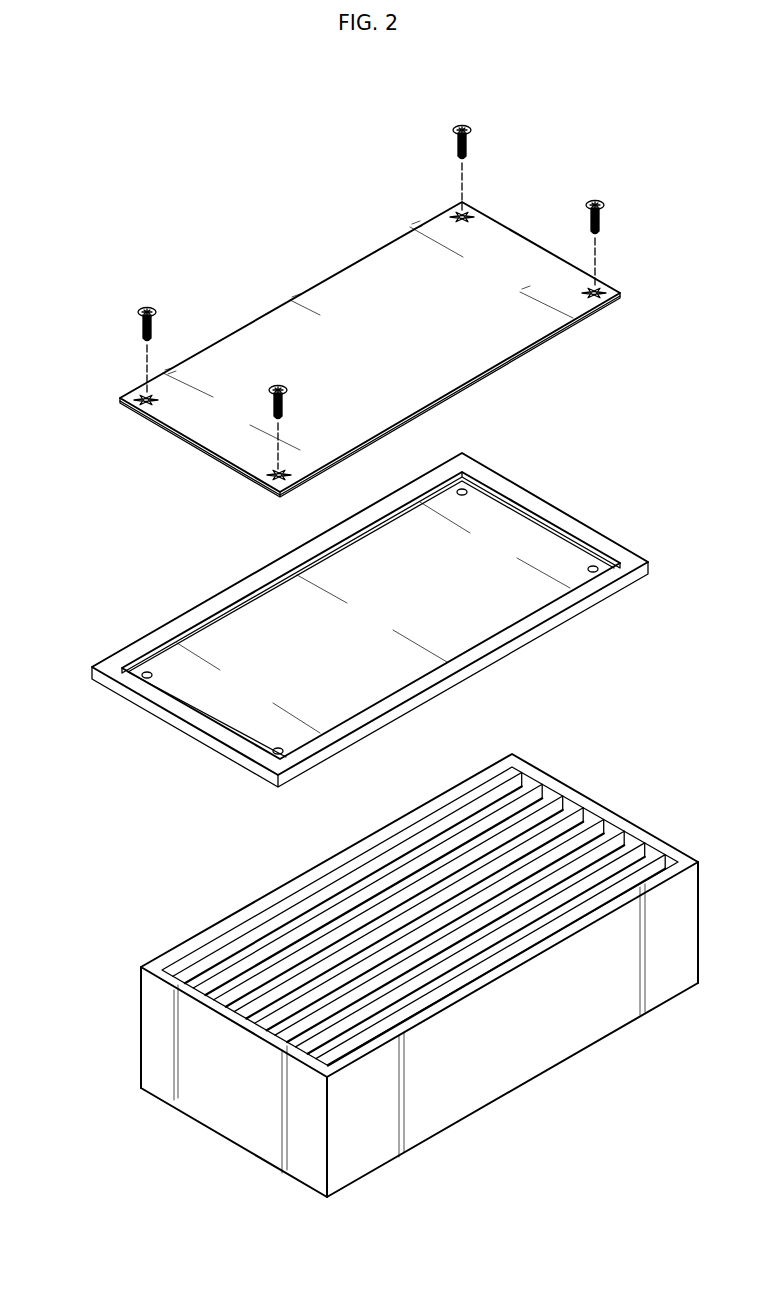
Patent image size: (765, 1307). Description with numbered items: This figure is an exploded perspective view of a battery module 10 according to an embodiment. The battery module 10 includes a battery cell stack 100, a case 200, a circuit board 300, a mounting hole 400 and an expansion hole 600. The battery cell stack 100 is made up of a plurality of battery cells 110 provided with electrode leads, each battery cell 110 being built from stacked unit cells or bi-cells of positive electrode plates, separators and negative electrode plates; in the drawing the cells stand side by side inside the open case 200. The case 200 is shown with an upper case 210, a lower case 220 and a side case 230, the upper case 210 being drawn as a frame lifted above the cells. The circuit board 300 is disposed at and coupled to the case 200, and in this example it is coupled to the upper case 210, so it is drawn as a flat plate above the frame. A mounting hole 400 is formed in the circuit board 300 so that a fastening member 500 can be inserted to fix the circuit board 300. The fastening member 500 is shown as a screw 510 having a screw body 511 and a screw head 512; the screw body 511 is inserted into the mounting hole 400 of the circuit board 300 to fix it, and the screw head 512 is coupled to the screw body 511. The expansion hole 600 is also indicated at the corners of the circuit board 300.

The battery module 10 is at (155, 108).
The battery cell stack 100 is at (289, 858).
The battery cell 110 is at (237, 972).
The case 200 is at (98, 1049).
The upper case 210 is at (152, 638).
The lower case 220 is at (165, 1108).
The side case 230 is at (152, 1003).
The circuit board 300 is at (200, 448).
The mounting hole 400 is at (137, 411).
The fastening member 500 is at (140, 270).
The screw 510 is at (152, 299).
The screw body 511 is at (141, 322).
The screw head 512 is at (142, 304).
The expansion hole 600 is at (142, 392).